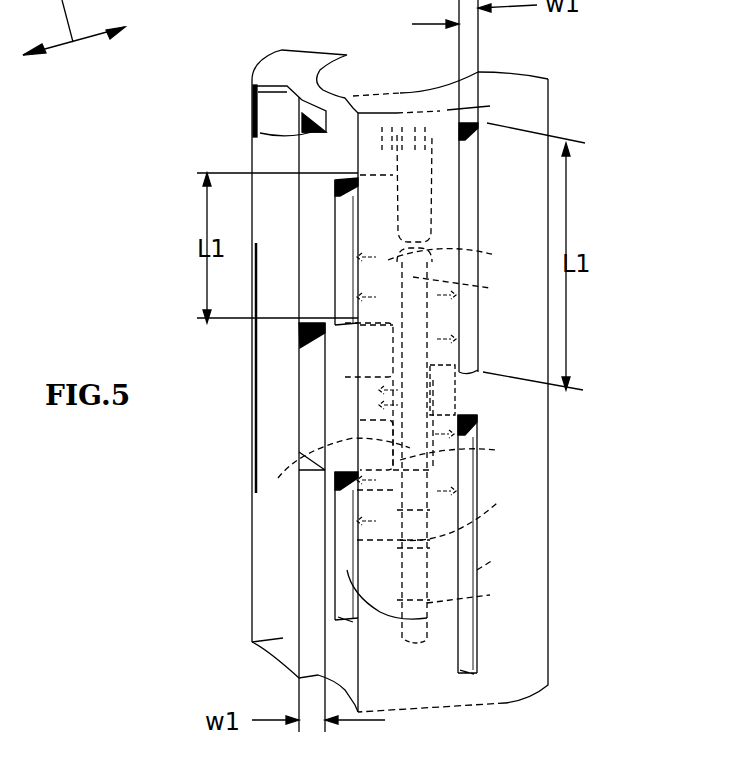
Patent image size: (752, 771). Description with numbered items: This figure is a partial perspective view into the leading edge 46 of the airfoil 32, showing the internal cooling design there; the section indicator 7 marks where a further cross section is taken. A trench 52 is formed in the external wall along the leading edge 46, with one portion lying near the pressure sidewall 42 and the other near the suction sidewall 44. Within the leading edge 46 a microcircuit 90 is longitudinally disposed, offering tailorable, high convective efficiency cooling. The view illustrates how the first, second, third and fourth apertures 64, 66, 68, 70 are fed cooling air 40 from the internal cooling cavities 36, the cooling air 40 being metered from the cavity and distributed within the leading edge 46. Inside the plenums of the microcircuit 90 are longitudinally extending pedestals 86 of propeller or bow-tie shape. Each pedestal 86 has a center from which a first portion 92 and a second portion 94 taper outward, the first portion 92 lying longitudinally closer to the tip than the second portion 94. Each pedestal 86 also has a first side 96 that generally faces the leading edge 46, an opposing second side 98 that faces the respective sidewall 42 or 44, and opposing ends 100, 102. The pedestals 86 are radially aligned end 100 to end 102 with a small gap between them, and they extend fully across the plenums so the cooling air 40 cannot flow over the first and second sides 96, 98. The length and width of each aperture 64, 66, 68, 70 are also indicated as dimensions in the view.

The section line 7- 7 is at (74, 36).
The airfoil 32 is at (170, 270).
The internal cooling cavities 36 is at (412, 85).
The cooling air 40 is at (343, 228).
The pressure sidewall 42 is at (533, 97).
The suction sidewall 44 is at (268, 60).
The leading edge 46 is at (252, 642).
The trench 52 is at (347, 117).
The first aperture 64 is at (343, 277).
The second aperture 66 is at (318, 120).
The third aperture 68 is at (467, 200).
The fourth aperture 70 is at (251, 116).
The pedestals 86 is at (466, 467).
The microcircuit 90 is at (172, 455).
The first portion 92 is at (470, 292).
The second portion 94 is at (387, 519).
The first side 96 is at (337, 340).
The second side 98 is at (475, 596).
The end 100 is at (475, 511).
The end 102 is at (470, 255).